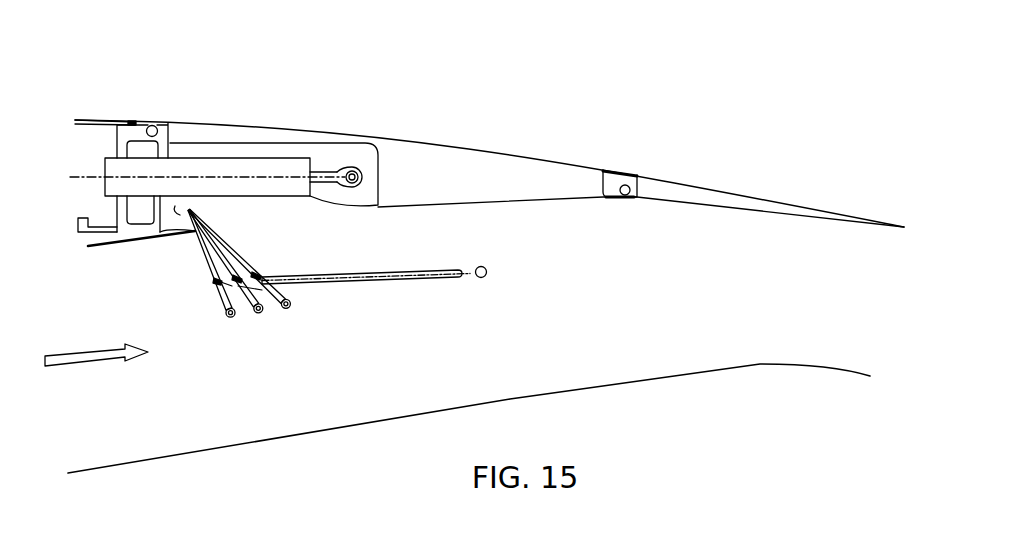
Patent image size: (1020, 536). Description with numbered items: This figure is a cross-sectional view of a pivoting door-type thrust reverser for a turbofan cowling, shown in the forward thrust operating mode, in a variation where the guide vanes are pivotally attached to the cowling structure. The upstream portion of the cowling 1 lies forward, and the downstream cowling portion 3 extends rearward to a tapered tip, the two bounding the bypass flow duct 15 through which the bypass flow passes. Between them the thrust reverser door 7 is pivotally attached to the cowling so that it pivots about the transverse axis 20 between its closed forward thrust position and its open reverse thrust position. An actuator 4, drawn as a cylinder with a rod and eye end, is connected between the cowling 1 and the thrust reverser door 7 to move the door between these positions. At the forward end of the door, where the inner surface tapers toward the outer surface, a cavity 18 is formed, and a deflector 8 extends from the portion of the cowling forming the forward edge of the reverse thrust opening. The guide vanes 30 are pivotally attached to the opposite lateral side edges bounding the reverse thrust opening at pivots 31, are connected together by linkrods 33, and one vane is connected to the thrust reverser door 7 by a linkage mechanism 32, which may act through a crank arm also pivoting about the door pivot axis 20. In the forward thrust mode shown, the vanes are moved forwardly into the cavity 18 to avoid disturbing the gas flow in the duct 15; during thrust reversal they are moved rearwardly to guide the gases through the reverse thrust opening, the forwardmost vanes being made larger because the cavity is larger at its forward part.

The upstream portion of the cowling 1 is at (128, 120).
The downstream cowling portion 3 is at (673, 188).
The actuator 4 is at (190, 170).
The thrust reverser door 7 is at (402, 152).
The deflector 8 is at (178, 233).
The bypass flow duct 15 is at (641, 242).
The cavity 18 is at (231, 312).
The transverse pivot axis 20 is at (487, 267).
The guide vanes 30 is at (235, 245).
The pivots 31 is at (257, 313).
The linkage mechanism 32 is at (373, 277).
The linkrods 33 is at (231, 317).